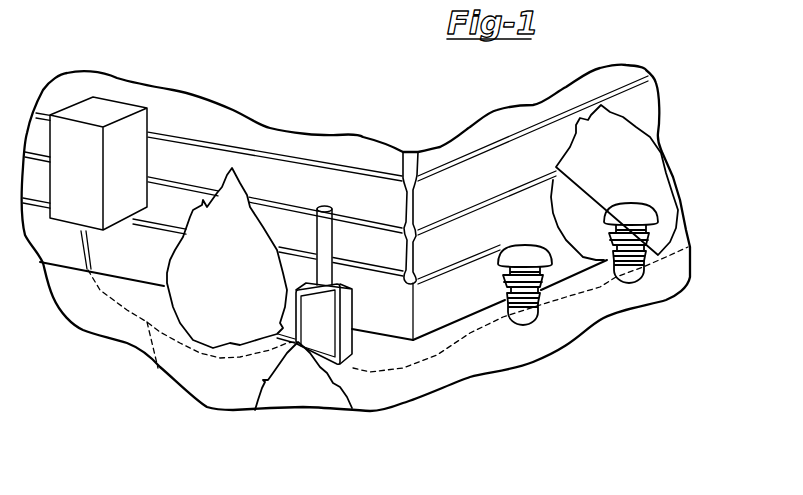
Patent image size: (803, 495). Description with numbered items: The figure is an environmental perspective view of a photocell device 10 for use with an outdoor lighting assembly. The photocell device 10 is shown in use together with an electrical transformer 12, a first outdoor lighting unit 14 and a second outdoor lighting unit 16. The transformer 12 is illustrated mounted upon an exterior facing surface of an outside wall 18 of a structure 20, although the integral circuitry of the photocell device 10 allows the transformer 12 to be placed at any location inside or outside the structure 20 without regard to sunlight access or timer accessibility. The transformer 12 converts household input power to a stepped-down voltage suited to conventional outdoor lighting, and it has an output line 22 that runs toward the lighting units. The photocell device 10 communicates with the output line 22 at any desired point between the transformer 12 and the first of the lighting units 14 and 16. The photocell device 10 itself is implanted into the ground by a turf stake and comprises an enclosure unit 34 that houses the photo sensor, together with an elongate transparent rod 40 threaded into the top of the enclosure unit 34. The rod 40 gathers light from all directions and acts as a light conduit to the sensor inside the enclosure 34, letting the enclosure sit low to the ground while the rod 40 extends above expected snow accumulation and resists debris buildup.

The photocell device 10 is at (346, 312).
The electrical transformer 12 is at (122, 100).
The first outdoor lighting unit 14 is at (527, 243).
The second outdoor lighting unit 16 is at (630, 202).
The outside wall 18 is at (191, 176).
The structure 20 is at (332, 150).
The output line 22 is at (160, 372).
The enclosure unit 34 is at (356, 350).
The transparent rod 40 is at (322, 245).